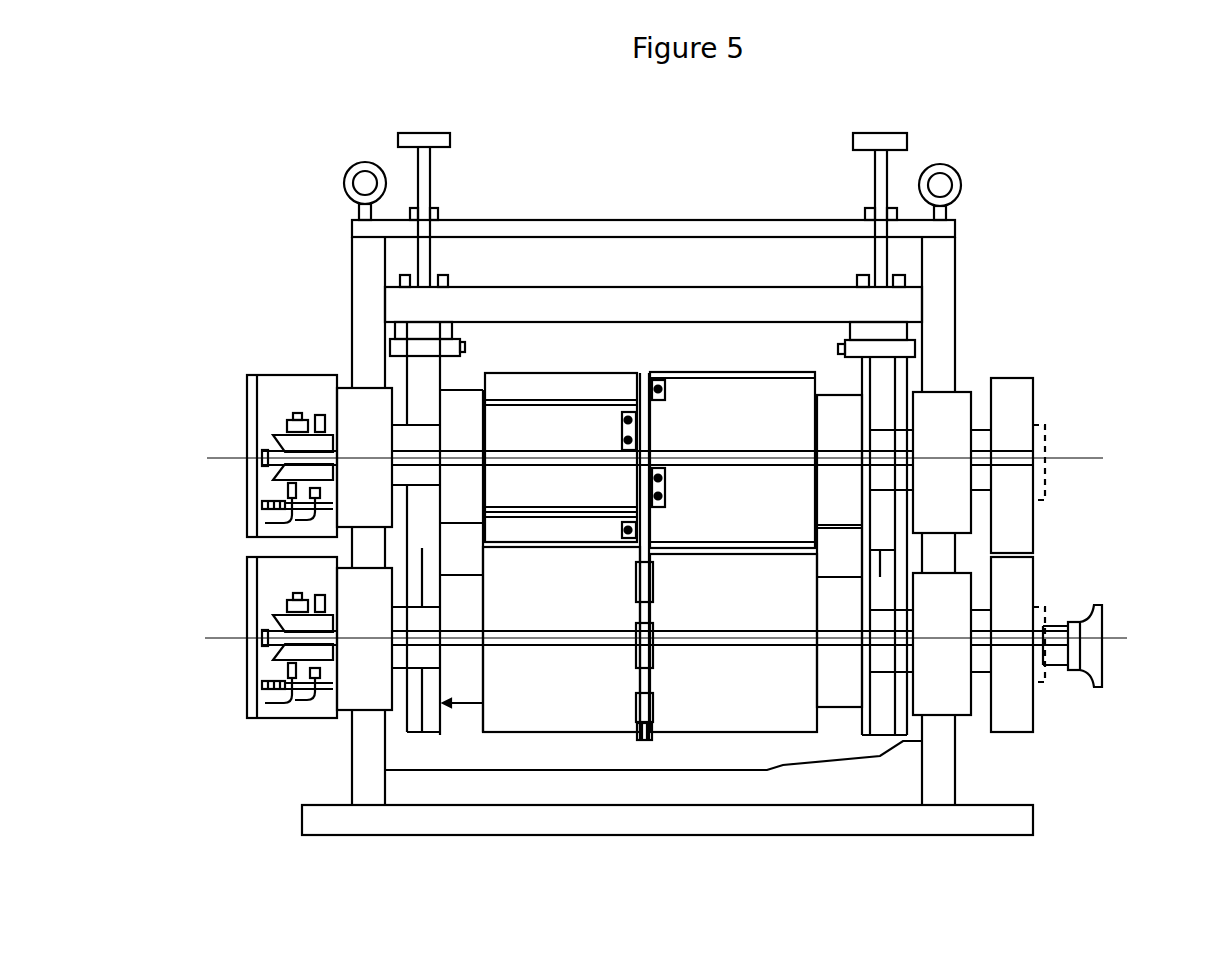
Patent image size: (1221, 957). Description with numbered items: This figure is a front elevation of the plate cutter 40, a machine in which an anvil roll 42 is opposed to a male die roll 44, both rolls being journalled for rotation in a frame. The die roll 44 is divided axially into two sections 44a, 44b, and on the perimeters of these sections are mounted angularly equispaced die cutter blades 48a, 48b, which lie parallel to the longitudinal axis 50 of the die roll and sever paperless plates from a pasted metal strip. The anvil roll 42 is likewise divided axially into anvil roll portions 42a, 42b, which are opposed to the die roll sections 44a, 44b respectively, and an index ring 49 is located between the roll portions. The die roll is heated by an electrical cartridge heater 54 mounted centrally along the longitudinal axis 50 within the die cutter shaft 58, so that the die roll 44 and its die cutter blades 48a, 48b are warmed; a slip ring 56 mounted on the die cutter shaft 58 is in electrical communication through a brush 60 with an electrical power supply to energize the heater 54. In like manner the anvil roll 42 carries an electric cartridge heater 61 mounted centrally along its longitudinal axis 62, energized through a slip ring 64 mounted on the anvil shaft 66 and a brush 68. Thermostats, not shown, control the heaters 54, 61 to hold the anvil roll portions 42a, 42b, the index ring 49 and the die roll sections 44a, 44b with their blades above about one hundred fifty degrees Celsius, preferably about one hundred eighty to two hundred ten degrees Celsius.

The plate cutter 40 is at (1035, 324).
The anvil roll 42 is at (717, 780).
The anvil roll portion 42a is at (793, 727).
The anvil roll portion 42b is at (575, 720).
The male die roll 44 is at (728, 370).
The die roll section 44a is at (763, 400).
The die roll section 44b is at (510, 385).
The die cutter blades 48a is at (700, 450).
The die cutter blades 48b is at (590, 513).
The index ring 49 is at (657, 582).
The longitudinal axis 50 is at (1077, 458).
The electrical cartridge heater 54 is at (470, 453).
The slip ring 56 is at (292, 415).
The die cutter shaft 58 is at (277, 437).
The brush 60 is at (263, 500).
The electric cartridge heater 61 is at (470, 647).
The longitudinal axis 62 is at (1118, 638).
The slip ring 64 is at (292, 595).
The anvil shaft 66 is at (273, 656).
The brush 68 is at (262, 686).